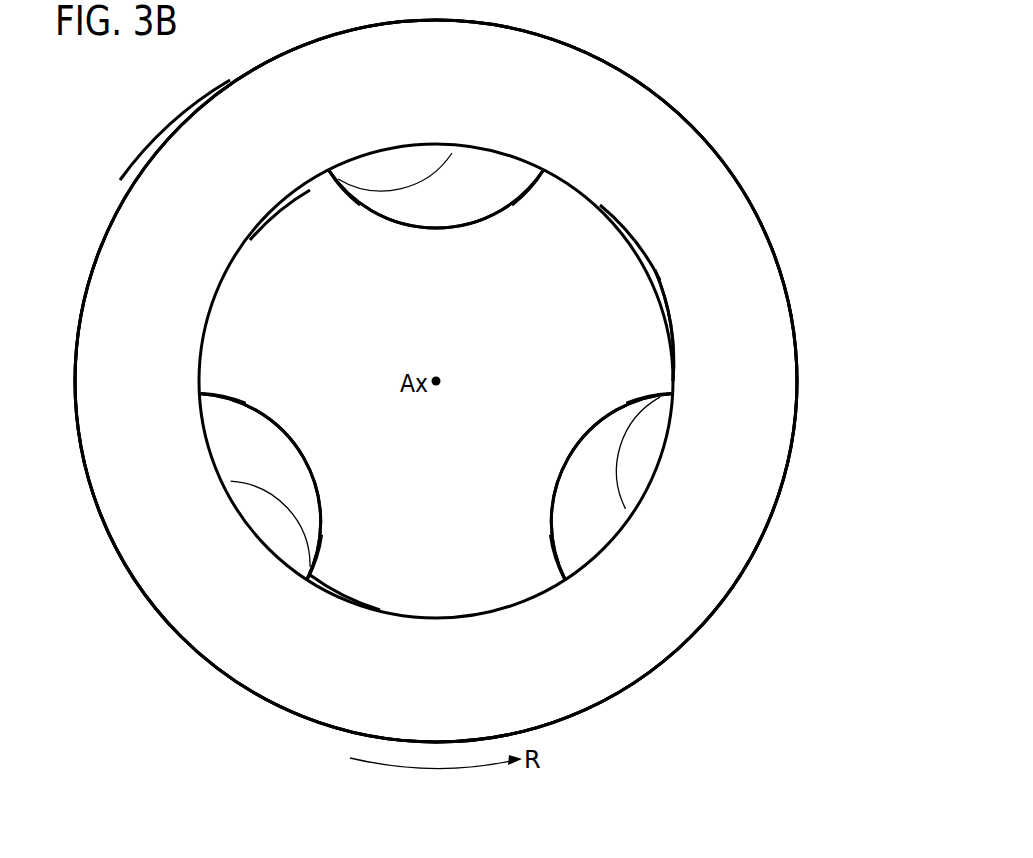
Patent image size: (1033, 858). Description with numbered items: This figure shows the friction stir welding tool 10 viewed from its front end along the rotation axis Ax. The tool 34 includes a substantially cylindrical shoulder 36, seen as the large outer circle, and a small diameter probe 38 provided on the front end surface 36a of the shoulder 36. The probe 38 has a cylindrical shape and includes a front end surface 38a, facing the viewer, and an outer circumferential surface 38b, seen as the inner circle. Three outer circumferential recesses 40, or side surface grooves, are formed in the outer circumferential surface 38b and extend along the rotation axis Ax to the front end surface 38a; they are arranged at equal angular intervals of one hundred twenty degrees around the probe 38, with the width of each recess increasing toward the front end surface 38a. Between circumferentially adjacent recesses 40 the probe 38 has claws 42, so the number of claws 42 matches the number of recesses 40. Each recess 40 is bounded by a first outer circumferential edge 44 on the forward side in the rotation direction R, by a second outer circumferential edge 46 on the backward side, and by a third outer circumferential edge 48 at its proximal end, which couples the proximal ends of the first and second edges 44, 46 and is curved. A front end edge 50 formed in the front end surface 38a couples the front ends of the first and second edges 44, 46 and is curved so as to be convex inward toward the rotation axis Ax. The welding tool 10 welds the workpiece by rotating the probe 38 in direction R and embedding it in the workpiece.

The welding tool 10 is at (709, 77).
The tool 34 is at (746, 77).
The shoulder 36 is at (138, 176).
The front end surface of the shoulder 36a is at (183, 148).
The probe 38 is at (608, 205).
The front end surface of the probe 38a is at (622, 312).
The outer circumferential surface of the probe 38b is at (635, 248).
The outer circumferential recess 40 is at (468, 183).
The claw 42 is at (665, 350).
The first outer circumferential edge 44 is at (328, 170).
The second outer circumferential edge 46 is at (518, 158).
The third outer circumferential edge 48 is at (365, 152).
The front end edge 50 is at (493, 216).